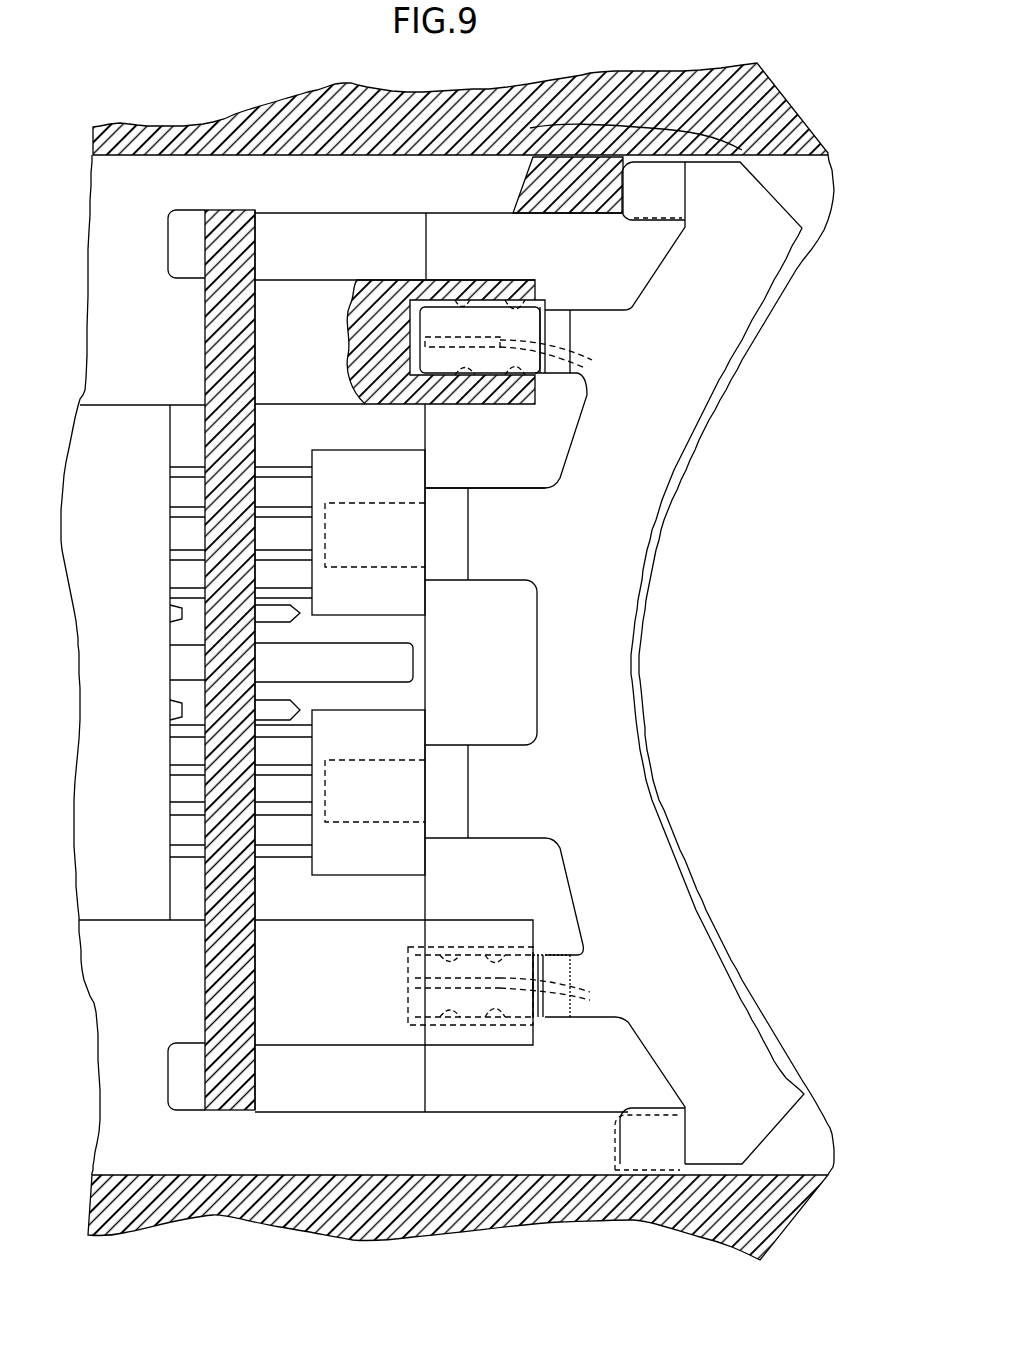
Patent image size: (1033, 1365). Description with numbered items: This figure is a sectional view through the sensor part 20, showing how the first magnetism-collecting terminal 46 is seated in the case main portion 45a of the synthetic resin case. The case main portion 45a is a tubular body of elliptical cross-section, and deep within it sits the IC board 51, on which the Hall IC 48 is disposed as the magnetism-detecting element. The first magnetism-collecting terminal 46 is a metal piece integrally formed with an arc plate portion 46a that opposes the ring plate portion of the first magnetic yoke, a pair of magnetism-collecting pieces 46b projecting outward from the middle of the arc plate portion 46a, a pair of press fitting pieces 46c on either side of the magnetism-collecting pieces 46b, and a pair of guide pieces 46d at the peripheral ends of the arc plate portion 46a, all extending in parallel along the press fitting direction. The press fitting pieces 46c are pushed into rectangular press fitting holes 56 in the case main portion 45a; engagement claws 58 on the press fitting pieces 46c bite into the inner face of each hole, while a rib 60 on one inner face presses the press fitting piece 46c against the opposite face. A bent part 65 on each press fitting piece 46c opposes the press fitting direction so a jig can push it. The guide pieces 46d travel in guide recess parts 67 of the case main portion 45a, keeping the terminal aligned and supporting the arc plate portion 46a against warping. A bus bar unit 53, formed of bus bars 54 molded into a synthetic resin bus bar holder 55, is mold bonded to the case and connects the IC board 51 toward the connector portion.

The sensor part 20 is at (447, 665).
The case main portion 45a is at (450, 1207).
The first magnetism-collecting terminal 46 is at (544, 605).
The arc plate portion 46a is at (598, 600).
The magnetism-collecting pieces 46b is at (437, 567).
The press fitting pieces 46c is at (516, 400).
The guide pieces 46d is at (655, 175).
The Hall IC 48 is at (343, 462).
The IC board 51 is at (213, 573).
The bus bar unit 53 is at (195, 660).
The bus bars 54 is at (170, 853).
The bus bar holder 55 is at (148, 898).
The press fitting holes 56 is at (537, 300).
The engagement claws 58 is at (517, 310).
The rib 60 is at (545, 345).
The bent part 65 is at (573, 330).
The guide recess part 67 is at (690, 213).